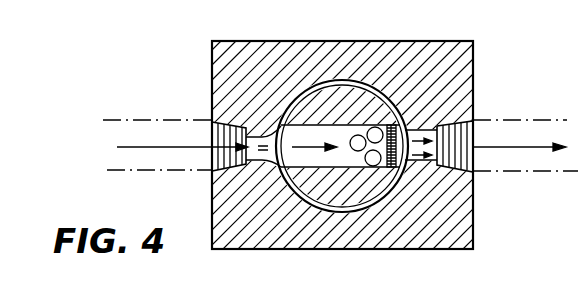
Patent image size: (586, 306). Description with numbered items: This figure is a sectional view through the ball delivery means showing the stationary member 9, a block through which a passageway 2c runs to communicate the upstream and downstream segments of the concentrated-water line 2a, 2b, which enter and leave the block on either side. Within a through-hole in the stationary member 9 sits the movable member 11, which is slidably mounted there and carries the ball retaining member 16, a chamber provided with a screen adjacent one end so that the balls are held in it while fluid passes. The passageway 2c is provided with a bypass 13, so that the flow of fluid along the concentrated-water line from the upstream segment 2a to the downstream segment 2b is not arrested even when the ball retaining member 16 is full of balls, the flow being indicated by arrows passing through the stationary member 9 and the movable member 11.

The stationary member 9 is at (452, 53).
The upstream segment of concentrated-water line 2a is at (130, 119).
The downstream segment of concentrated-water line 2b is at (540, 119).
The passageway 2c is at (418, 170).
The movable member 11 is at (291, 104).
The bypass 13 is at (375, 89).
The ball retaining member 16 is at (337, 125).